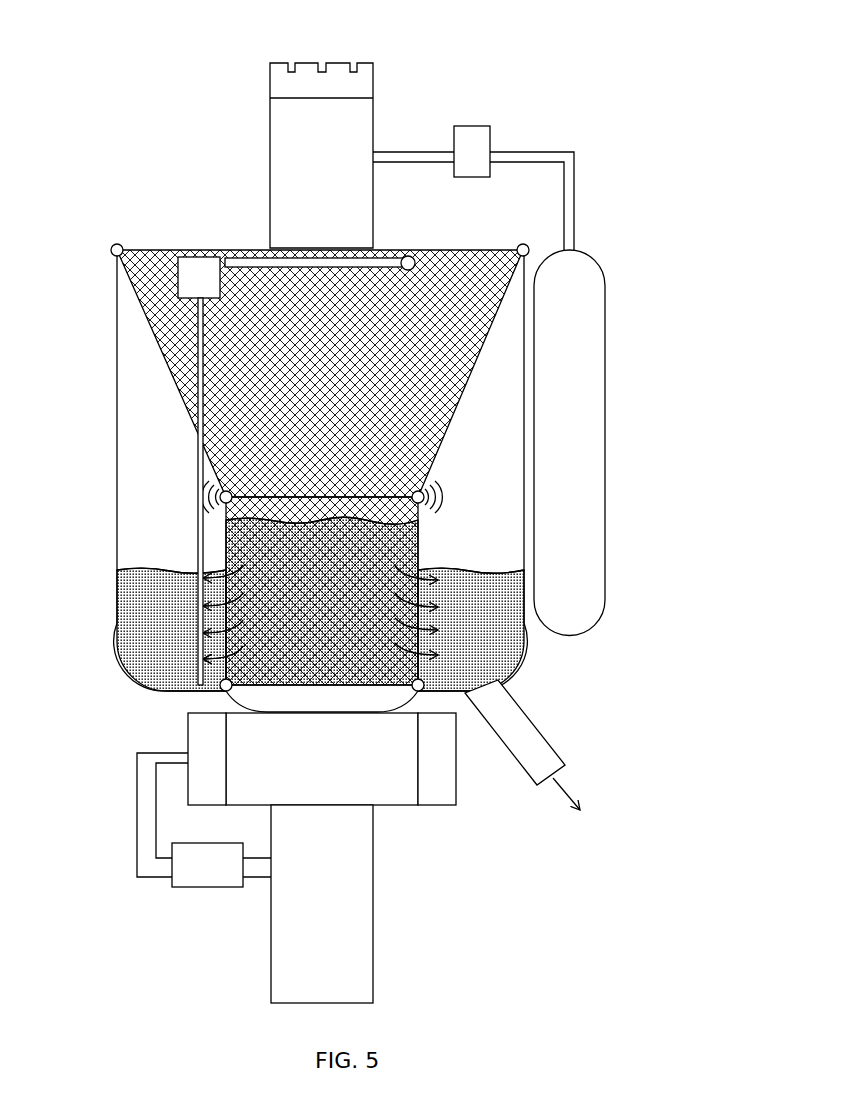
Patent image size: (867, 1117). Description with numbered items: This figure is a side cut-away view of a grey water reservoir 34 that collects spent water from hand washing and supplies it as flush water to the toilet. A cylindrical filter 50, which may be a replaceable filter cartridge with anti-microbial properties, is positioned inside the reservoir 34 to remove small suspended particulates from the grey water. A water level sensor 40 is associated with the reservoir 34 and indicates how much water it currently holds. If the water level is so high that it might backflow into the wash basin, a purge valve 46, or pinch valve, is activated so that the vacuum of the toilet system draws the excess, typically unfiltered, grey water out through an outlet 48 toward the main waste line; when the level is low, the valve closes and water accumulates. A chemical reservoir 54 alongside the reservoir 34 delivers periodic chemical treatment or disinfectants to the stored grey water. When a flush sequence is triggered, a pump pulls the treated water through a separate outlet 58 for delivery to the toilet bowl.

The grey water reservoir 34 is at (433, 58).
The water level sensor 40 is at (198, 418).
The purge valve 46 is at (296, 800).
The outlet 48 is at (345, 911).
The filter 50 is at (283, 577).
The chemical reservoir 54 is at (577, 462).
The outlet 58 is at (532, 743).